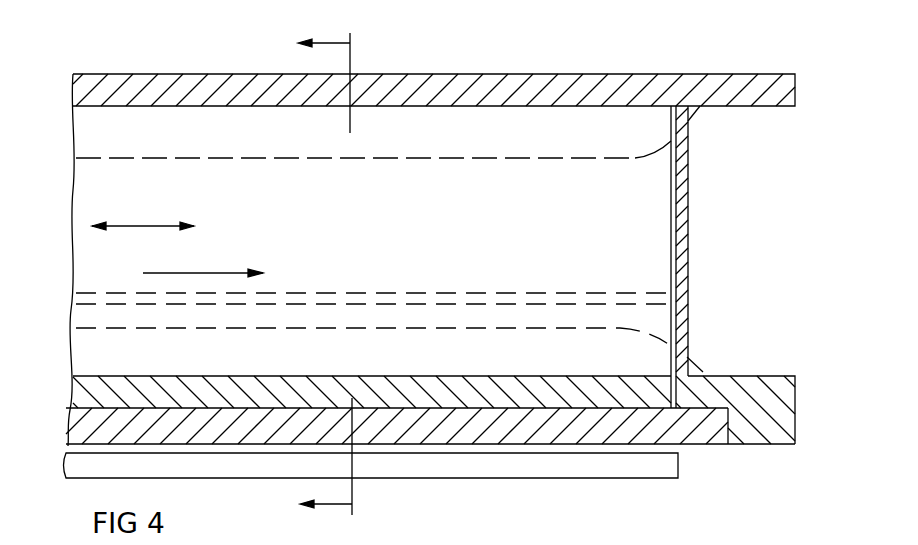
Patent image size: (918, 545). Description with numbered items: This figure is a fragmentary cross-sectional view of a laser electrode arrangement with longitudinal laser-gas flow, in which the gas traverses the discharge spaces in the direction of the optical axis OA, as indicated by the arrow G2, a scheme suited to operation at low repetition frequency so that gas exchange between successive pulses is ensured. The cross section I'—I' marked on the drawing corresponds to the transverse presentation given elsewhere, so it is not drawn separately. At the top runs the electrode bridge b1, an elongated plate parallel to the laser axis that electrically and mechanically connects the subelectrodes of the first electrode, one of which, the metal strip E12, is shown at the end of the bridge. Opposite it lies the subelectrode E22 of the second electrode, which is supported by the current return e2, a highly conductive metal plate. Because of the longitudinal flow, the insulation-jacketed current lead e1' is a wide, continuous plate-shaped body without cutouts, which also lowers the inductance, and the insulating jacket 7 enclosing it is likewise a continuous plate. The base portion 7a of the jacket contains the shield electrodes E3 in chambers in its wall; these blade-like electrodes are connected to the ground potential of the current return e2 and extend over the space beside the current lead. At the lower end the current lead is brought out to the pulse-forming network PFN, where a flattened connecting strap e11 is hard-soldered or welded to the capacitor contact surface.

The electrode bridge b1 is at (608, 82).
The insulating jacket 7 is at (690, 225).
The base portion 7a is at (583, 290).
The subelectrode E12 is at (690, 109).
The subelectrode E22 is at (692, 370).
The shield electrode E3 is at (728, 286).
The current lead e1' is at (500, 238).
The current return e2 is at (752, 435).
The connecting strap e11 is at (668, 466).
The optical axis OA is at (131, 208).
The arrow G2 is at (176, 274).
The cross section I' is at (325, 275).
The pulse-forming network PFN is at (497, 525).